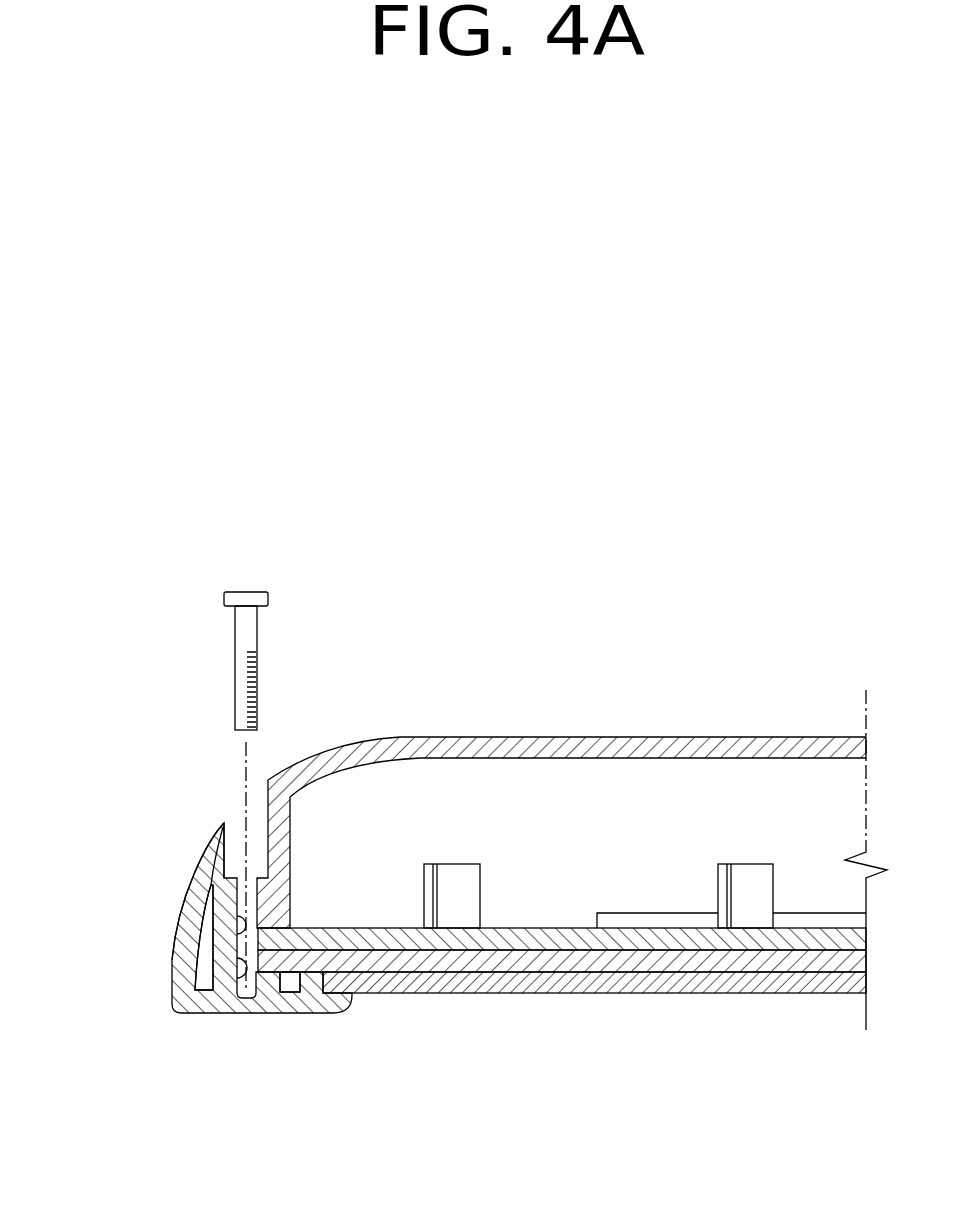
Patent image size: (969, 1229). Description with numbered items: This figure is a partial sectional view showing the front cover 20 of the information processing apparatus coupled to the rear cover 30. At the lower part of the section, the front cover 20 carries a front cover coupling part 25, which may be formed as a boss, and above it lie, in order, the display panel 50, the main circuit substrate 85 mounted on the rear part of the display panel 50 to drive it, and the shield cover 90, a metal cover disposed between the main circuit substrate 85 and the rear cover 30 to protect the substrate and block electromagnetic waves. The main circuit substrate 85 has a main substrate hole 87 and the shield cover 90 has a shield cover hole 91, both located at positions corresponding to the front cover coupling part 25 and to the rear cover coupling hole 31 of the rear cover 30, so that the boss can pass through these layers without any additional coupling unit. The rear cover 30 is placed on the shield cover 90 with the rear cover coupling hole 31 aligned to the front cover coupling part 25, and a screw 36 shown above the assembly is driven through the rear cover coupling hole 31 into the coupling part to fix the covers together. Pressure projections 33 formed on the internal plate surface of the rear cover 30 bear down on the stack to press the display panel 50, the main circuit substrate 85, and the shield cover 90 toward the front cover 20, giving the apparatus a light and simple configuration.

The front cover 20 is at (213, 1013).
The front cover coupling part 25 is at (284, 1013).
The rear cover 30 is at (600, 737).
The rear cover coupling hole 31 is at (236, 883).
The pressure projection 33 is at (452, 864).
The screw 36 is at (235, 640).
The display panel 50 is at (803, 985).
The main circuit substrate 85 is at (713, 967).
The main substrate hole 87 is at (195, 975).
The shield cover 90 is at (597, 950).
The shield cover hole 91 is at (205, 896).